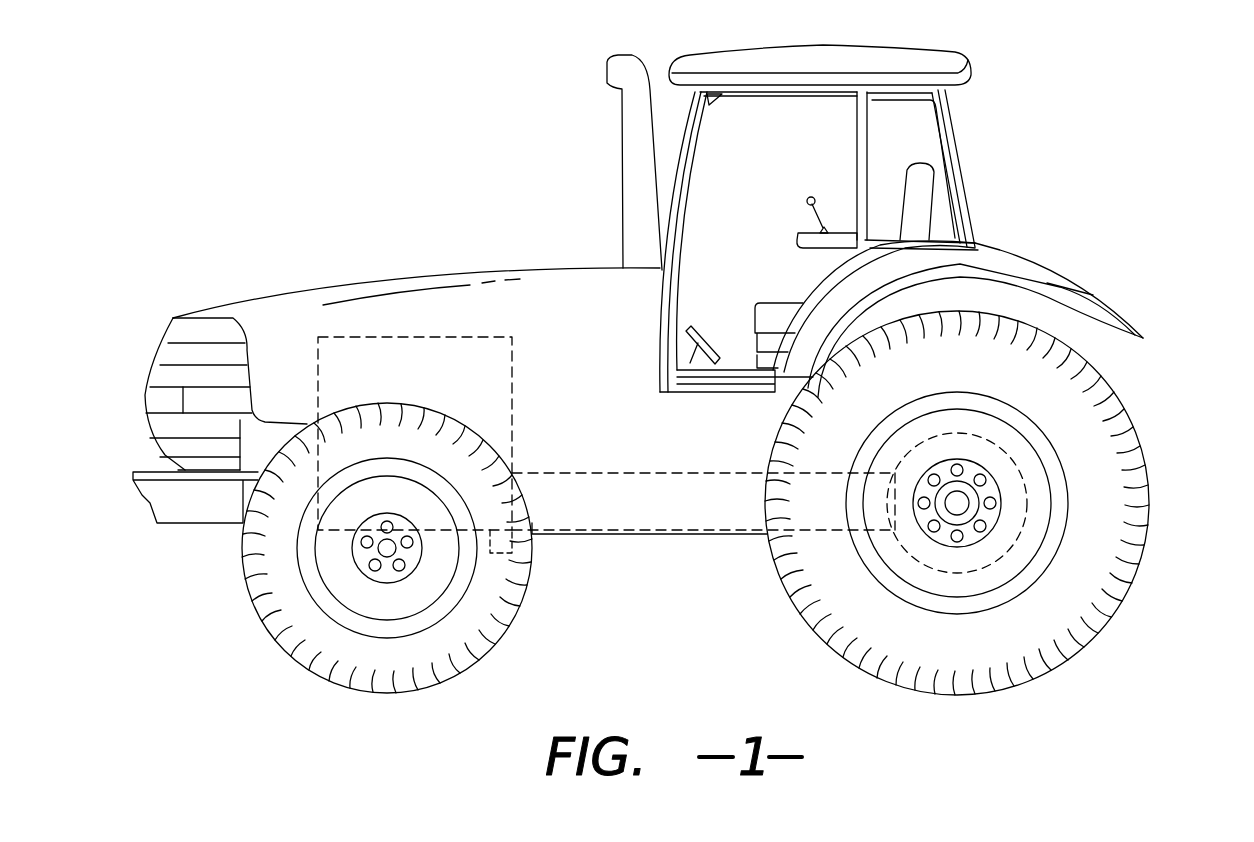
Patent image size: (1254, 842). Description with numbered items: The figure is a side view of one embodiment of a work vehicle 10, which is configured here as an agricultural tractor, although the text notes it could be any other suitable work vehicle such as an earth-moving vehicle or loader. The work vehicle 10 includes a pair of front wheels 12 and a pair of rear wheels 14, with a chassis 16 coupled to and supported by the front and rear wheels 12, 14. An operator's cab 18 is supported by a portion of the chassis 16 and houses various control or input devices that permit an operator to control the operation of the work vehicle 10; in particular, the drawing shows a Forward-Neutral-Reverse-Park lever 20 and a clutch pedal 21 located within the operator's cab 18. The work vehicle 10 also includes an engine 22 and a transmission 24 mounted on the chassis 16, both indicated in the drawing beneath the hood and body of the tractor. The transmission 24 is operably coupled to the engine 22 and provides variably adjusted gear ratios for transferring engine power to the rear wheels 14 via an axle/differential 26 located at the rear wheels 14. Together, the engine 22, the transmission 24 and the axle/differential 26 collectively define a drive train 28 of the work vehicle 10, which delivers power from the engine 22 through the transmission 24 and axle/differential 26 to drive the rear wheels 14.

The work vehicle 10 is at (322, 180).
The front wheels 12 is at (245, 563).
The rear wheels 14 is at (1150, 533).
The chassis 16 is at (598, 535).
The operator's cab 18 is at (963, 170).
The Forward-Neutral-Reverse-Park (FNRP) lever 20 is at (808, 198).
The clutch pedal 21 is at (705, 347).
The engine 22 is at (388, 338).
The transmission 24 is at (657, 470).
The axle/differential 26 is at (1070, 503).
The drive train 28 is at (563, 297).